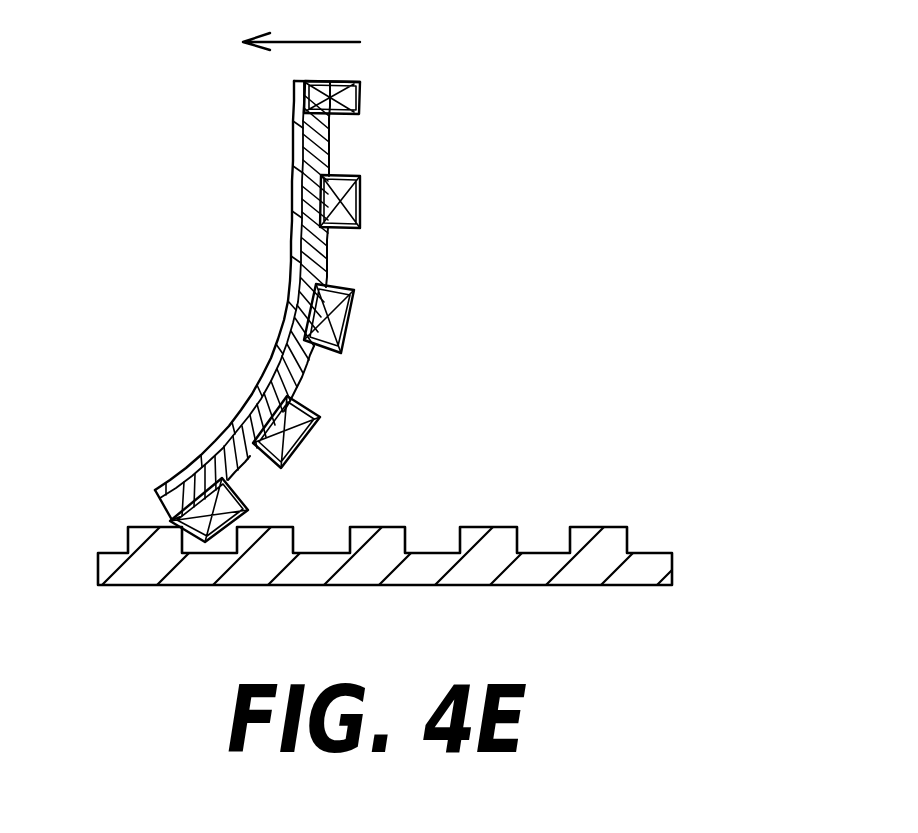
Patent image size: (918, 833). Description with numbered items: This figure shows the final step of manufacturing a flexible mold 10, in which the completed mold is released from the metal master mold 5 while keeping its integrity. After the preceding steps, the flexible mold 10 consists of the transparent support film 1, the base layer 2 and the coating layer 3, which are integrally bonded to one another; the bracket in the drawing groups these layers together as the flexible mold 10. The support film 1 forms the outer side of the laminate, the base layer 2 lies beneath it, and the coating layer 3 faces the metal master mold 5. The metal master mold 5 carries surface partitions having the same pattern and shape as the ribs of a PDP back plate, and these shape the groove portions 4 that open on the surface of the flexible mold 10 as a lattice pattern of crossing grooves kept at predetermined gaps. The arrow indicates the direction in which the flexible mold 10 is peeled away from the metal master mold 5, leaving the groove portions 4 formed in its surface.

The support film 1 is at (297, 83).
The base layer 2 is at (341, 177).
The coating layer 3 is at (362, 204).
The groove portions 4 is at (277, 472).
The metal master mold 5 is at (637, 578).
The flexible mold 10 is at (475, 45).